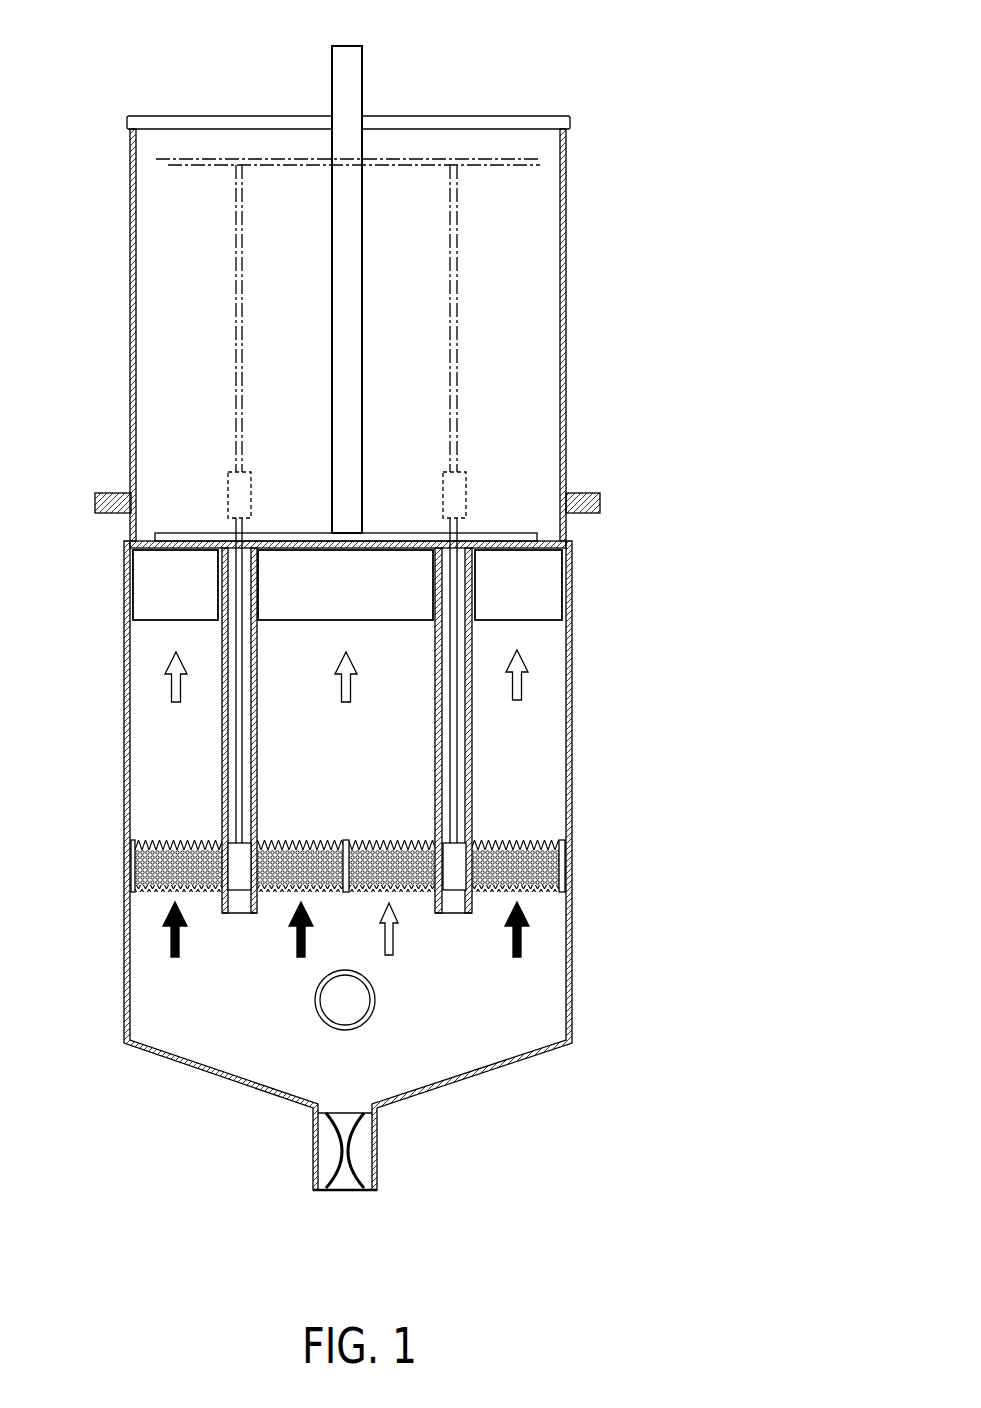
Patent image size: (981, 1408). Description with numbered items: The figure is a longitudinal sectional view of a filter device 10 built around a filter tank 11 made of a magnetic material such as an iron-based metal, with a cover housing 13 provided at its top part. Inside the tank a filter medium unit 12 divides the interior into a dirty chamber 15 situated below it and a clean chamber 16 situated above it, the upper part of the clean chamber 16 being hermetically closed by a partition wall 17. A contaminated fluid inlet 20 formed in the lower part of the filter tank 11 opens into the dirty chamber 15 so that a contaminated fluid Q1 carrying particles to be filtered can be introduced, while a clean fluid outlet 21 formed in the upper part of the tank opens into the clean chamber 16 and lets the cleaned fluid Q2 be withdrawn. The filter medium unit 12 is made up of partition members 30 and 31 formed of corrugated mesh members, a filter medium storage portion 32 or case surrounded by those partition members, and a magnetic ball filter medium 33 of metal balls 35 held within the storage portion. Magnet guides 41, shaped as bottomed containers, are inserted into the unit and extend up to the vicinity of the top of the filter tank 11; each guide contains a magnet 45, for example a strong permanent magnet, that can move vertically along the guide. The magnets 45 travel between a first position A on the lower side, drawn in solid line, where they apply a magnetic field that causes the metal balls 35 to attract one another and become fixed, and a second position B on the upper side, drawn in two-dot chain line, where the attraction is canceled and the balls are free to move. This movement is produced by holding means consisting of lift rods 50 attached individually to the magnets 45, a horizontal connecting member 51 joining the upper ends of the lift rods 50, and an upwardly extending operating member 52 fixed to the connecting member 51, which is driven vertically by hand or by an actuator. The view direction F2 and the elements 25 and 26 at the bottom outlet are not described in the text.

The filter device 10 is at (590, 73).
The filter tank 11 is at (572, 747).
The filter medium unit 12 is at (542, 824).
The cover housing 13 is at (566, 350).
The dirty chamber 15 is at (331, 1061).
The clean chamber 16 is at (331, 746).
The partition wall 17 is at (312, 541).
The contaminated fluid inlet 20 is at (335, 1012).
The clean fluid outlet 21 is at (160, 610).
The outlet valve 25 is at (350, 1175).
The outlet pipe 26 is at (378, 1140).
The partition member 30 is at (325, 840).
The partition member 31 is at (318, 888).
The filter medium storage portion 32 is at (280, 840).
The magnetic ball filter medium 33 is at (395, 840).
The metal balls 35 is at (413, 888).
The magnet guide 41 is at (222, 812).
The magnet 45 is at (236, 890).
The lift rod 50 is at (235, 348).
The connecting member 51 is at (385, 158).
The operating member 52 is at (340, 350).
The contaminated fluid Q1 is at (522, 942).
The cleaned fluid Q2 is at (522, 684).
The first position A is at (572, 869).
The second position B is at (475, 501).
The view direction F2 is at (495, 105).